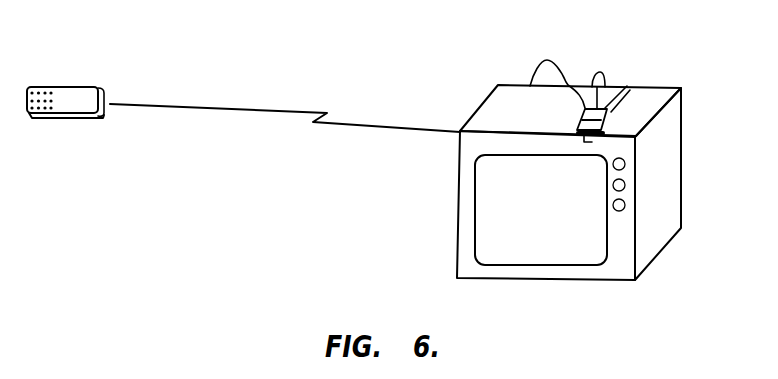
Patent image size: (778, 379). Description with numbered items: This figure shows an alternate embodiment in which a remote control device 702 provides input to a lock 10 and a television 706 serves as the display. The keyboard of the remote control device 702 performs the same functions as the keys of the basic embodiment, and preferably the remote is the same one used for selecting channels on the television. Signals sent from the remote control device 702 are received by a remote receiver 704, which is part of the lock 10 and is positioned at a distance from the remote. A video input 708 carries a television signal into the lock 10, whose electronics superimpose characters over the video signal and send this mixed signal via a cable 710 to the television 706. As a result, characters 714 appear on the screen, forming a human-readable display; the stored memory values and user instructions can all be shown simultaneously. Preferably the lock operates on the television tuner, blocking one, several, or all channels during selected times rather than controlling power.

The lock 10 is at (608, 123).
The remote control device 702 is at (88, 86).
The remote receiver 704 is at (592, 142).
The television 706 is at (668, 193).
The video input 708 is at (601, 72).
The cable 710 is at (547, 60).
The characters 714 is at (508, 202).